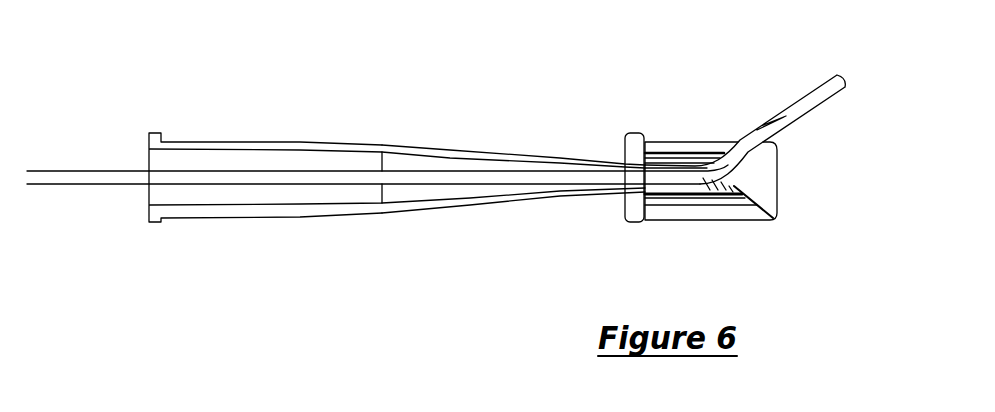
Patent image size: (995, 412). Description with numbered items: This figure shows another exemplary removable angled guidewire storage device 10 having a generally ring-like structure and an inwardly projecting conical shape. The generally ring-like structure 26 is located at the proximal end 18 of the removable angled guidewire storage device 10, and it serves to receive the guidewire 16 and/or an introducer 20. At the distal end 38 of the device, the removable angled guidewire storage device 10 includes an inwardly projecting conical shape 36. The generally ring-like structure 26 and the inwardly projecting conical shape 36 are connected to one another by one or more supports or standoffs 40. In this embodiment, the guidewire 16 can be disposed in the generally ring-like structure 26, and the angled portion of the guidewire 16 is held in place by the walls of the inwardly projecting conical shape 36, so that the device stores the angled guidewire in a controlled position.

The removable angled guidewire storage device 10 is at (603, 87).
The guidewire 16 is at (547, 178).
The proximal end 18 is at (621, 196).
The introducer 20 is at (311, 204).
The generally ring-like structure 26 is at (636, 133).
The inwardly projecting conical shape 36 is at (755, 174).
The distal end 38 is at (777, 212).
The supports or standoffs 40 is at (692, 148).